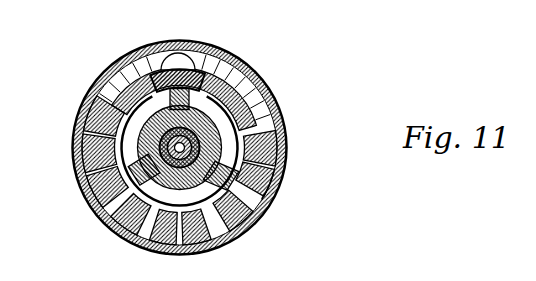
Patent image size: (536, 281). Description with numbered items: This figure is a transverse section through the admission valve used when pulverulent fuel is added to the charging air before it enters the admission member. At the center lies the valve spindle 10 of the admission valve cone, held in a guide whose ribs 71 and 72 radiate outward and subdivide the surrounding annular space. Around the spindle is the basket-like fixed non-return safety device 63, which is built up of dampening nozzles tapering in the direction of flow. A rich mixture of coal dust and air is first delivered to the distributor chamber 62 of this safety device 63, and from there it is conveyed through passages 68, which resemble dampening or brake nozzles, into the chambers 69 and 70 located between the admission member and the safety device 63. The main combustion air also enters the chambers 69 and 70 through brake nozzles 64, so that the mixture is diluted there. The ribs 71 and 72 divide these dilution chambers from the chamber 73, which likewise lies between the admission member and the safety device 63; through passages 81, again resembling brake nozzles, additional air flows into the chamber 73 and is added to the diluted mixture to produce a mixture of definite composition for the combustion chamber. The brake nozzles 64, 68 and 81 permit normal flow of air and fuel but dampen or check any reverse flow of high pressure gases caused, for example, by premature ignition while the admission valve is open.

The valve spindle 10 is at (176, 166).
The distributor chamber 62 is at (193, 52).
The fixed non-return safety device 63 is at (73, 160).
The brake nozzles 64 is at (93, 137).
The passages 68 is at (235, 88).
The chamber 69 is at (225, 140).
The chamber 70 is at (158, 98).
The rib 71 is at (105, 193).
The rib 72 is at (267, 188).
The chamber 73 is at (210, 195).
The passages 81 is at (180, 240).